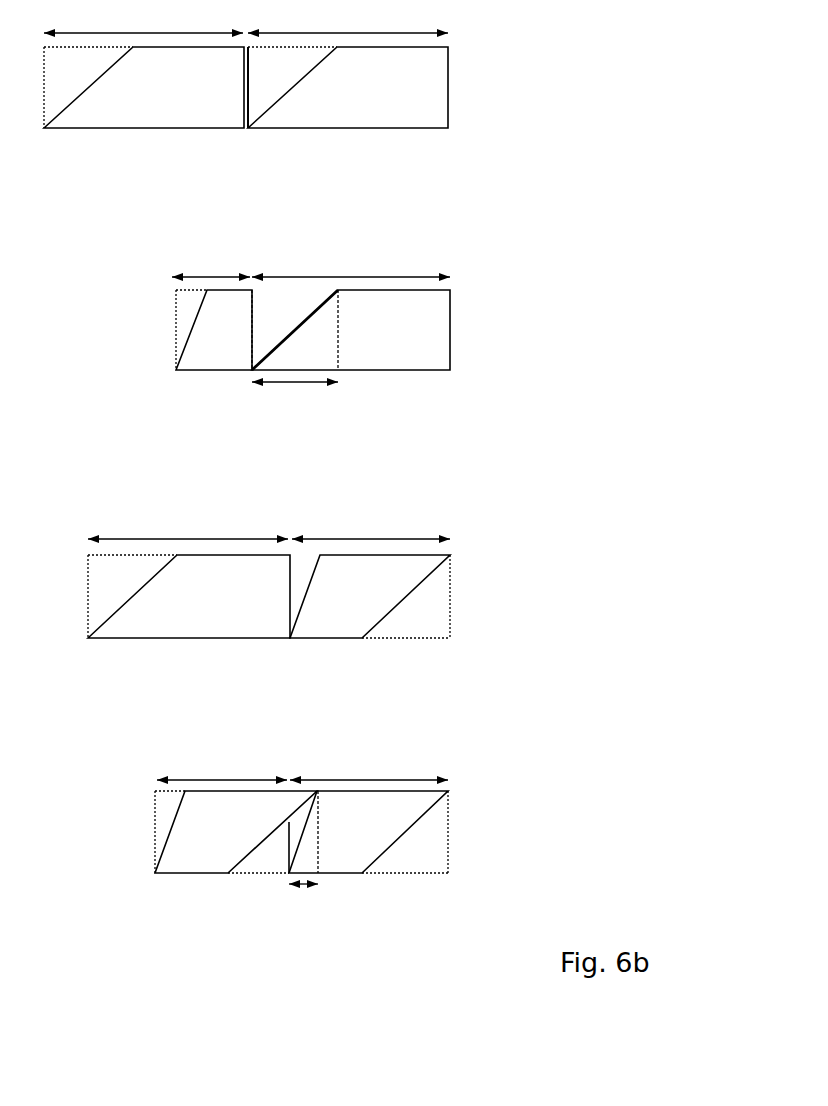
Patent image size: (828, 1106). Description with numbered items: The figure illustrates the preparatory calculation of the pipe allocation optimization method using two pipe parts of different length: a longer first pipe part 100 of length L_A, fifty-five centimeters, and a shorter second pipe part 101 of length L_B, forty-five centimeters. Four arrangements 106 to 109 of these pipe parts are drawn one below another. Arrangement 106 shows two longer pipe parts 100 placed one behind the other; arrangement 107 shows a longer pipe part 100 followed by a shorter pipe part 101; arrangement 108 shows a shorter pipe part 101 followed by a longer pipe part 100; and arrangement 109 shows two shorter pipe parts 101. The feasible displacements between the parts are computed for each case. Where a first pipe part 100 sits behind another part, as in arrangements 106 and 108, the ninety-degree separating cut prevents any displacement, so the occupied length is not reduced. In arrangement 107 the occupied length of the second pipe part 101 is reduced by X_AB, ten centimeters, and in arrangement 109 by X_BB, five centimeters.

The first pipe part 100 is at (223, 120).
The second pipe part 101 is at (233, 361).
The arrangement 106 is at (448, 140).
The arrangement 107 is at (450, 408).
The arrangement 108 is at (450, 650).
The arrangement 109 is at (448, 908).